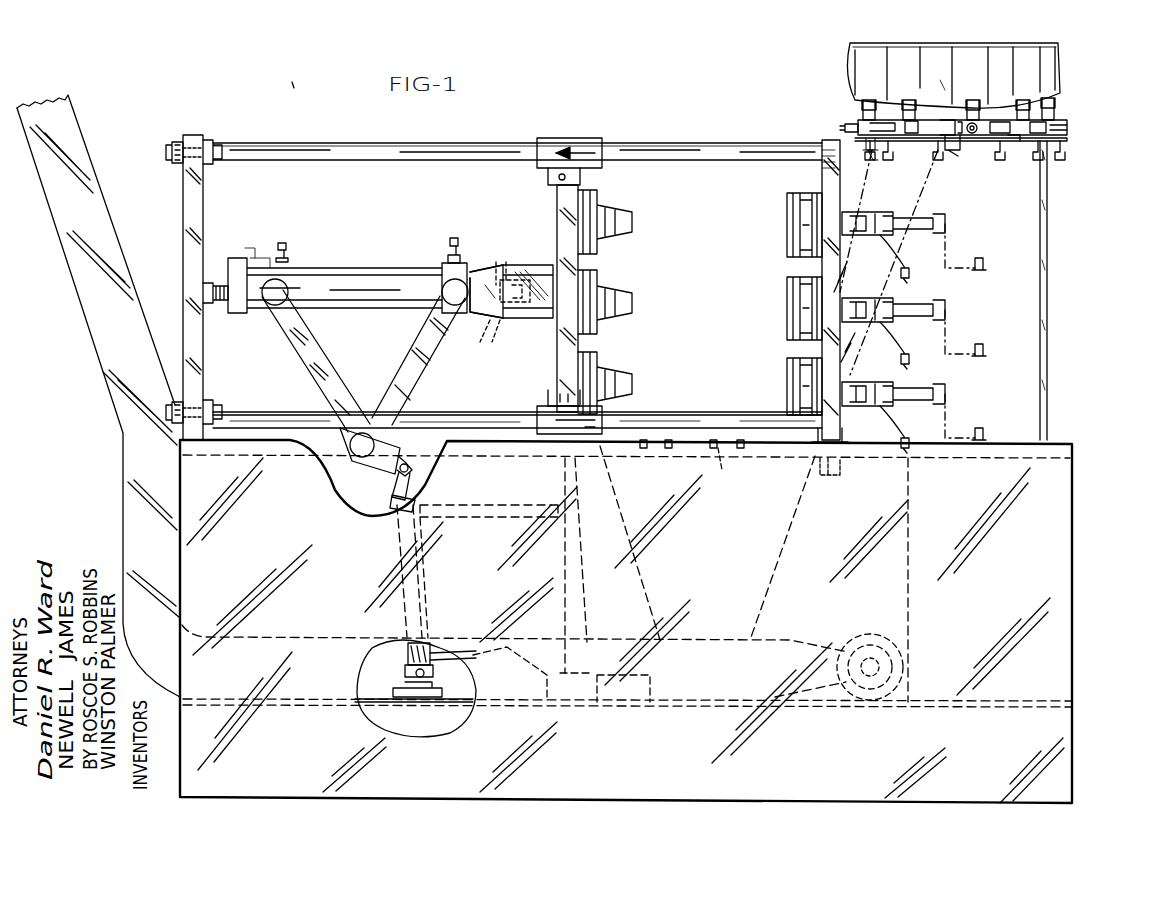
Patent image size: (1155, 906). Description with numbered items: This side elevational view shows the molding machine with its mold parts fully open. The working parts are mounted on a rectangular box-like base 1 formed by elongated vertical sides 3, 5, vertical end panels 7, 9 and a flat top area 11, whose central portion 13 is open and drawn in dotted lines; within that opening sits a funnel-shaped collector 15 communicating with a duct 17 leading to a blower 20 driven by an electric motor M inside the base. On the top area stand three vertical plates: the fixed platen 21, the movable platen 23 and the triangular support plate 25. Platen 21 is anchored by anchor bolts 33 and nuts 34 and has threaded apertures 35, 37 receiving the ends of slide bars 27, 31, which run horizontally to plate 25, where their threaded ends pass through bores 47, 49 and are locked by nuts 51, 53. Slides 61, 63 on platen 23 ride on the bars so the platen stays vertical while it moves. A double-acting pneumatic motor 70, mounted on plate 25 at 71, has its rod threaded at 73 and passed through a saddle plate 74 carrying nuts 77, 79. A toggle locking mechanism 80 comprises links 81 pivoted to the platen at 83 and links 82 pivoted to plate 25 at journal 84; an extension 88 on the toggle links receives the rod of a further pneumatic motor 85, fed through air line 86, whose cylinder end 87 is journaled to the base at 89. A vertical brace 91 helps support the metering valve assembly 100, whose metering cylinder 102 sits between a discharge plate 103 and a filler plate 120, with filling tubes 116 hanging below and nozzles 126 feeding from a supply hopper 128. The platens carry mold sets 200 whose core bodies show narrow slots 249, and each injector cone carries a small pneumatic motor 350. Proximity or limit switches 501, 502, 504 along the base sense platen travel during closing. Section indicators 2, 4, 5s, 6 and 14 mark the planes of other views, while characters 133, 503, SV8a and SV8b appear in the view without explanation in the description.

The base 1 is at (1040, 512).
The vertical side 5 is at (972, 604).
The vertical end panel 7 is at (1073, 606).
The vertical end panel 9 is at (184, 752).
The central portion of top area 13 is at (720, 472).
The funnel-shaped collector 15 is at (768, 592).
The duct 17 is at (536, 642).
The blower 20 is at (906, 667).
The electric motor M is at (900, 657).
The fixed platen 21 is at (790, 345).
The movable platen 23 is at (580, 348).
The support plate 25 is at (204, 188).
The slide bar 27 is at (682, 420).
The slide bar 31 is at (712, 161).
The anchor bolt 33 is at (828, 476).
The nut 34 is at (846, 468).
The threaded aperture 35 is at (822, 160).
The threaded aperture 37 is at (843, 432).
The bore 47 is at (203, 408).
The bore 49 is at (198, 143).
The nut 51 is at (214, 138).
The nut 53 is at (176, 140).
The slide 61 is at (588, 436).
The slide 63 is at (568, 140).
The double acting pneumatic motor 70 is at (374, 270).
The barrel end mounting 71 is at (220, 282).
The threaded rod end 73 is at (510, 320).
The saddle plate 74 is at (502, 261).
The nut 77 is at (462, 318).
The nut 79 is at (490, 341).
The toggle locking mechanism 80 is at (362, 392).
The toggle link 81 is at (412, 392).
The toggle link 82 is at (320, 348).
The pivot connection 83 is at (466, 264).
The journal 84 is at (272, 307).
The pneumatic motor 85 is at (428, 592).
The air line 86 is at (437, 652).
The cylinder end 87 is at (378, 538).
The extension 88 is at (460, 505).
The journal connection 89 is at (432, 685).
The vertical brace 91 is at (1047, 320).
The metering valve assembly 100 is at (973, 153).
The metering cylinder 102 is at (948, 142).
The discharge plate 103 is at (1010, 142).
The filling tubes 116 is at (860, 190).
The filler plate 120 is at (1058, 115).
The nozzles 126 is at (885, 108).
The supply hopper 128 is at (1000, 80).
The fitting 133 is at (912, 140).
The mold set 200 is at (758, 222).
The narrow slots 249 is at (622, 215).
The pneumatic motor 350 is at (940, 218).
The proximity or limit switch 501 is at (644, 449).
The proximity or limit switch 502 is at (668, 449).
The foot 503 is at (712, 449).
The magnetic proximity or limit switch 504 is at (741, 449).
The solenoid valve SV8a is at (578, 705).
The solenoid valve SV8b is at (648, 705).
The section line 2 is at (1115, 185).
The vertical side 3 is at (788, 122).
The section line 4 is at (625, 113).
The section line 5 5s is at (545, 135).
The section line 6 is at (550, 378).
The top area 11 is at (1068, 140).
The section line 14 is at (130, 242).